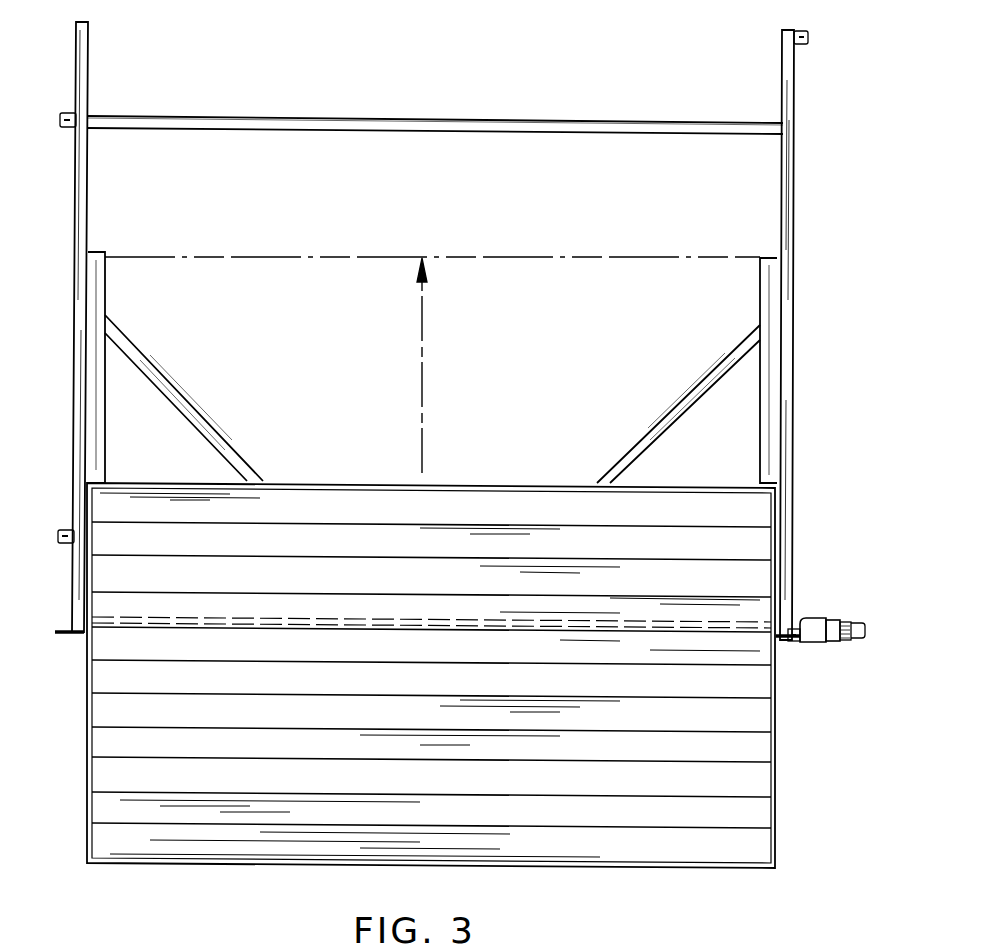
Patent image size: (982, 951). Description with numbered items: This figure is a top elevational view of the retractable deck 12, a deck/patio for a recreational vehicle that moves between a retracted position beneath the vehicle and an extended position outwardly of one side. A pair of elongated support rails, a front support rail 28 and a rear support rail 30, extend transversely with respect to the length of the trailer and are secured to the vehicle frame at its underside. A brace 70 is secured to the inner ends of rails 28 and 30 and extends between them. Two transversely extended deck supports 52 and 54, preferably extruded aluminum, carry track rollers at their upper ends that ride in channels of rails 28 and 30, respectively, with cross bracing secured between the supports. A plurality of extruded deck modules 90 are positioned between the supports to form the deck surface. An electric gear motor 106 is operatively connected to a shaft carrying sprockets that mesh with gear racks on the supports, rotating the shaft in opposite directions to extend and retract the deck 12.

The retractable deck 12 is at (80, 705).
The front support rail 28 is at (784, 186).
The rear support rail 30 is at (88, 187).
The deck support 52 is at (760, 303).
The deck support 54 is at (105, 294).
The brace 70 is at (373, 120).
The extruded deck module 90 is at (735, 773).
The electric gear motor 106 is at (832, 618).